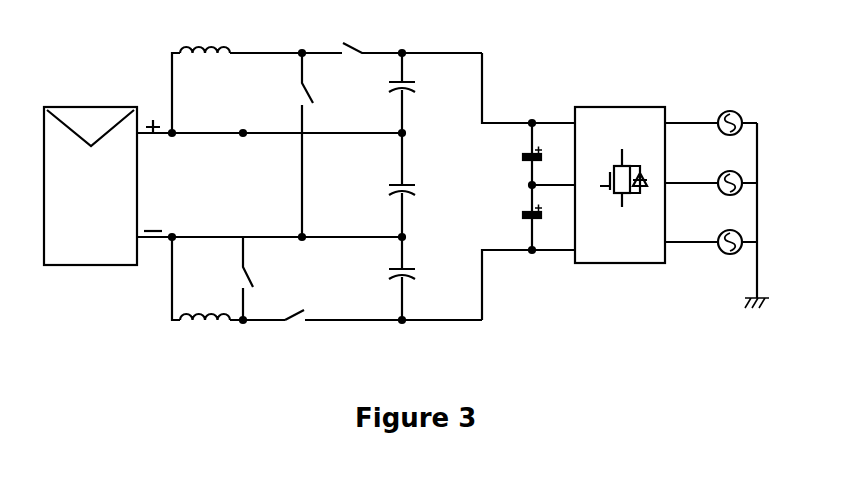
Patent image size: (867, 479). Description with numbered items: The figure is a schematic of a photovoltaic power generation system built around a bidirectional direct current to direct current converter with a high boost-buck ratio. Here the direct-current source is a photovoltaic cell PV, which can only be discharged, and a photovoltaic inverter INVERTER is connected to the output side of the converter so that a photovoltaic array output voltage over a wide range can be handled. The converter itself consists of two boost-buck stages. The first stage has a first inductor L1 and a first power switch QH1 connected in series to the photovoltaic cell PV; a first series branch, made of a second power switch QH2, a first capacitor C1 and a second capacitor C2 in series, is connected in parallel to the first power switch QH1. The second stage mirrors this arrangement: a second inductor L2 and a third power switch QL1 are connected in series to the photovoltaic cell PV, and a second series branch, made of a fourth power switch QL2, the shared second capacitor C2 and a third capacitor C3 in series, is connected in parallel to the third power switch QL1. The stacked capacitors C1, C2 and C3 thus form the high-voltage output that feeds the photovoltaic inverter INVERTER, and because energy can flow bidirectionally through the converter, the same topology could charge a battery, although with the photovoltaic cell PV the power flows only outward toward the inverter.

The photovoltaic cell PV is at (90, 174).
The first inductor L1 is at (257, 80).
The second inductor L2 is at (228, 293).
The first power switch QH1 is at (287, 145).
The second power switch QH2 is at (407, 38).
The third power switch QL1 is at (228, 278).
The fourth power switch QL2 is at (383, 330).
The first capacitor C1 is at (389, 93).
The second capacitor C2 is at (389, 185).
The third capacitor C3 is at (389, 278).
The photovoltaic inverter INVERTER is at (614, 168).